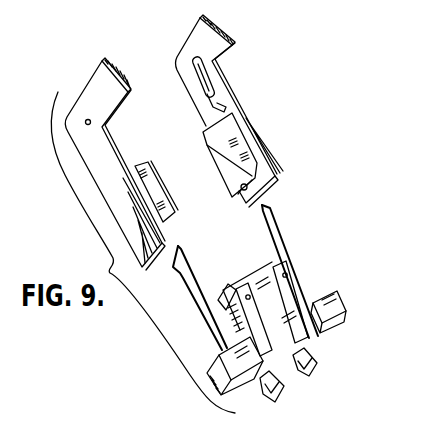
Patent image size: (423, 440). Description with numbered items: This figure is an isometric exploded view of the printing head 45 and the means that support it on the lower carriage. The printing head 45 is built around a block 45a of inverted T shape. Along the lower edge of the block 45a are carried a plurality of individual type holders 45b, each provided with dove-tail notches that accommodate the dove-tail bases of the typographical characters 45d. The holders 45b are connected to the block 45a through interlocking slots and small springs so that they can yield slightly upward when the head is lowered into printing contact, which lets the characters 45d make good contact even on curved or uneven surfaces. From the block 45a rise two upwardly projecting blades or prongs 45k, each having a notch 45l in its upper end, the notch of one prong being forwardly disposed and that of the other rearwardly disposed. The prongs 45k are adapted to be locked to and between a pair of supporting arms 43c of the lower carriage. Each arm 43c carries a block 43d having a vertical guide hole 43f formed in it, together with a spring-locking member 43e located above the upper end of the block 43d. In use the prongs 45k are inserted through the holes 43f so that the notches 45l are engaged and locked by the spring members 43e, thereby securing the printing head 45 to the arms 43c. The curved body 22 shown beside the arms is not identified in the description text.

The arm body 22 is at (190, 266).
The supporting arms 43c is at (115, 139).
The block 43d is at (172, 158).
The spring-locking member 43e is at (224, 68).
The vertical guide hole 43f is at (242, 192).
The printing head 45 is at (290, 270).
The block 45a is at (249, 280).
The type holders 45b is at (338, 326).
The typographical characters 45d is at (284, 392).
The blades or prongs 45k is at (293, 250).
The notch 45l is at (273, 217).